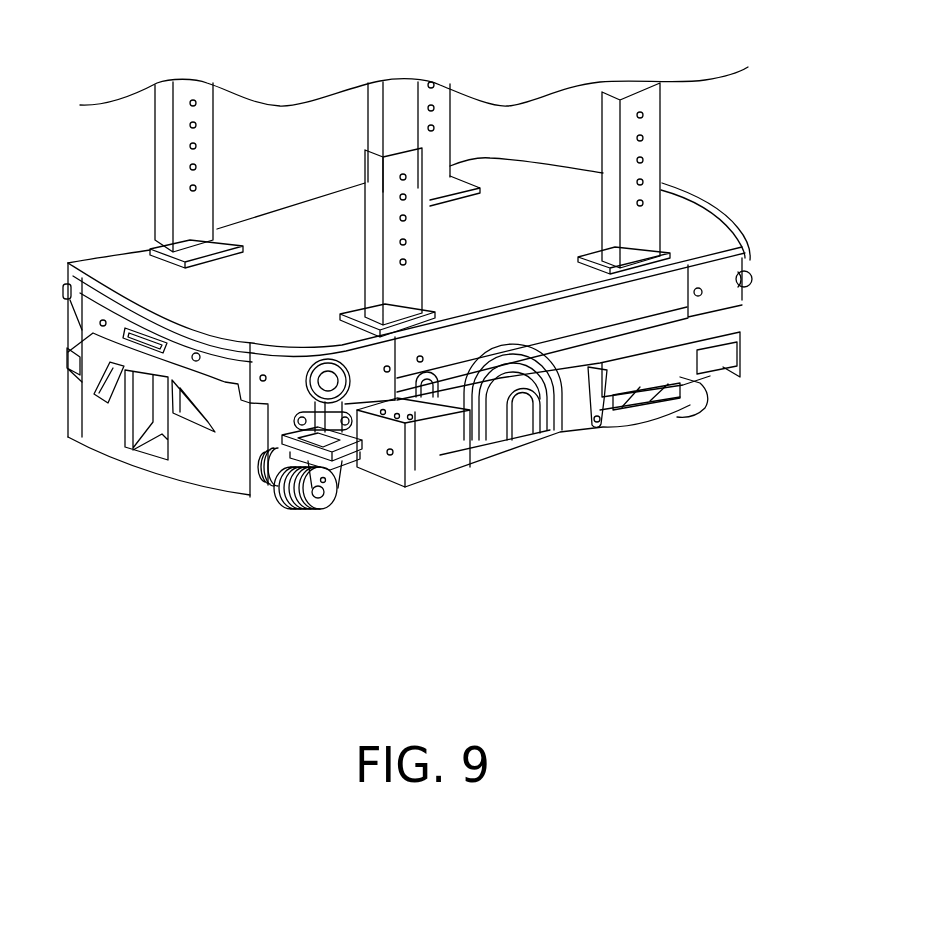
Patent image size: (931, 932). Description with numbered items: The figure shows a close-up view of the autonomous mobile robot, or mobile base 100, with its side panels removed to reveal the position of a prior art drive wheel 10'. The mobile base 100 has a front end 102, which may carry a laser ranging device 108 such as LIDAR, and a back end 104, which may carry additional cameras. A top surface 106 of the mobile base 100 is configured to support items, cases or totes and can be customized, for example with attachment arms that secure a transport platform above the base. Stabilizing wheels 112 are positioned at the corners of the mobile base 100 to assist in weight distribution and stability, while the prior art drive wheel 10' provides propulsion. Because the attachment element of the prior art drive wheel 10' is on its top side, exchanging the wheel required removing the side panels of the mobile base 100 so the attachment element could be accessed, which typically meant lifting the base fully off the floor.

The mobile base 100 is at (142, 73).
The front end 102 is at (712, 204).
The back end 104 is at (72, 301).
The top surface 106 is at (515, 181).
The laser ranging device 108 is at (107, 427).
The stabilizing wheels 112 is at (313, 507).
The prior art drive wheel 10' is at (513, 426).